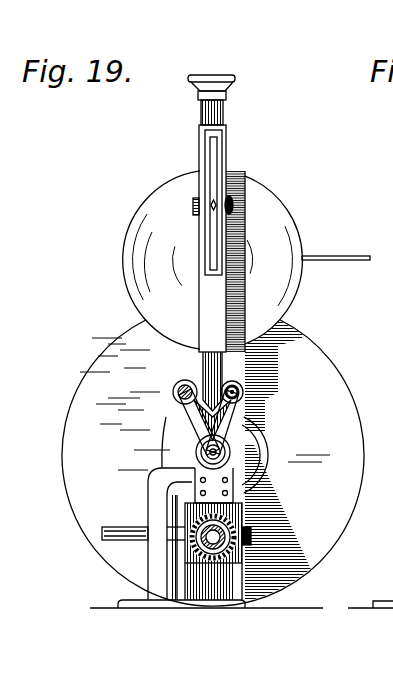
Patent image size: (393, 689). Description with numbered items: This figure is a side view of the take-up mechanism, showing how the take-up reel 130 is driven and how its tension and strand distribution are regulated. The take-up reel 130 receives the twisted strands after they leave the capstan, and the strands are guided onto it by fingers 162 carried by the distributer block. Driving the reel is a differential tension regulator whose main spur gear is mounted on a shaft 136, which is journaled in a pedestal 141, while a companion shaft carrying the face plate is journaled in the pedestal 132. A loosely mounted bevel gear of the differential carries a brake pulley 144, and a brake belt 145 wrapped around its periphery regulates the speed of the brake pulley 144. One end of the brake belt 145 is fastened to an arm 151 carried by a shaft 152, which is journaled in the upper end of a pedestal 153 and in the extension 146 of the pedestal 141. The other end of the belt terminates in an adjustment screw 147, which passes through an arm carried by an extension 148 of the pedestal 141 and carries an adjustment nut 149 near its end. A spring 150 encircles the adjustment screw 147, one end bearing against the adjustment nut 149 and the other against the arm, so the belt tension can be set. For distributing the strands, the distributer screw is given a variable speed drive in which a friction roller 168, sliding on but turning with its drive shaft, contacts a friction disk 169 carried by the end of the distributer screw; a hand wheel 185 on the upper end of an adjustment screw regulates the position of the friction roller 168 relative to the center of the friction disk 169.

The take-up reel 130 is at (326, 541).
The pedestal 132 is at (221, 593).
The shaft 136 is at (216, 450).
The pedestal 141 is at (157, 592).
The brake pulley 144 is at (163, 437).
The brake belt 145 is at (166, 416).
The extension 146 is at (192, 433).
The adjustment screw 147 is at (247, 400).
The extension 148 is at (245, 412).
The adjustment nut 149 is at (225, 377).
The spring 150 is at (241, 382).
The arm 151 is at (172, 390).
The shaft 152 is at (182, 383).
The pedestal 153 is at (390, 601).
The fingers 162 is at (356, 256).
The friction roller 168 is at (232, 205).
The friction disk 169 is at (294, 222).
The hand wheel 185 is at (222, 79).